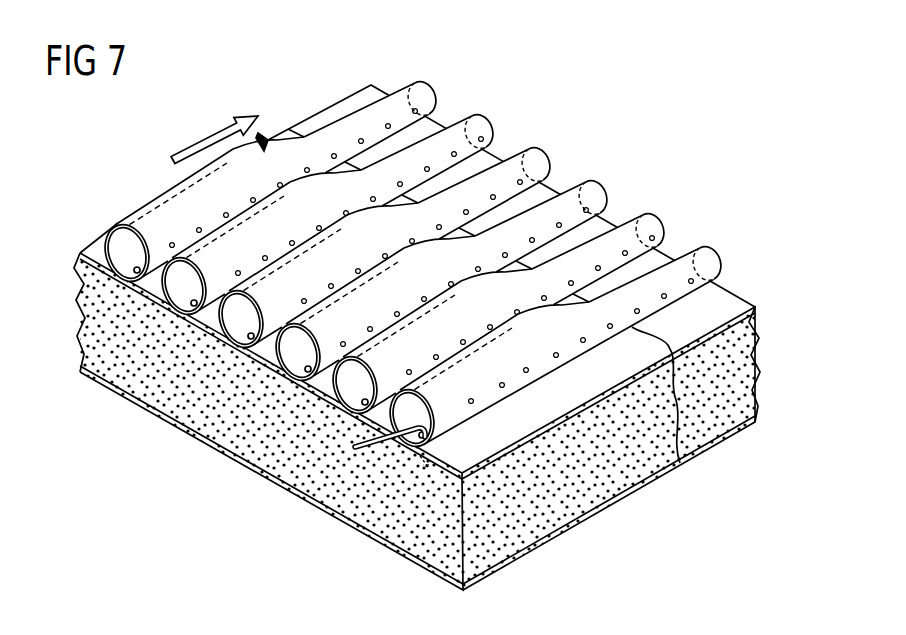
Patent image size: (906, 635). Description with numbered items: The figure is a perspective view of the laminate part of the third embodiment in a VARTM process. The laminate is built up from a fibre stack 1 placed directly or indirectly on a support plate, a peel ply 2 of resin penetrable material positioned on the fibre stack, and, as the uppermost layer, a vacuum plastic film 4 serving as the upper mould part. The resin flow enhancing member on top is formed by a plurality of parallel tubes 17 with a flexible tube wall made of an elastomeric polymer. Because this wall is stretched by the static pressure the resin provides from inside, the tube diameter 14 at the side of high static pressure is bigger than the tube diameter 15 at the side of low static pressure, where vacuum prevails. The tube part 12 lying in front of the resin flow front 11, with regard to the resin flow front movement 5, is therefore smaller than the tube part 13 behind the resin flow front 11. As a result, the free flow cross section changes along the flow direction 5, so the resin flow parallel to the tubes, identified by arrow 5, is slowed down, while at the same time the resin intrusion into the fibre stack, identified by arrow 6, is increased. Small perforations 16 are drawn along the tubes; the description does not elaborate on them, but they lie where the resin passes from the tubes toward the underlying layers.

The fibre stack 1 is at (92, 323).
The peel ply 2 is at (755, 307).
The vacuum plastic film 4 is at (259, 478).
The resin flow front movement 5 is at (204, 146).
The resin intrusion flow 6 is at (356, 449).
The resin flow front 11 is at (686, 453).
The tube part in front of the resin flow front 12 is at (351, 128).
The tube part behind the resin flow front 13 is at (156, 215).
The tube diameter at the side of high static pressure 14 is at (118, 246).
The tube diameter at the side of low static pressure 15 is at (426, 96).
The perforations 16 is at (529, 370).
The parallel tubes 17 is at (265, 137).